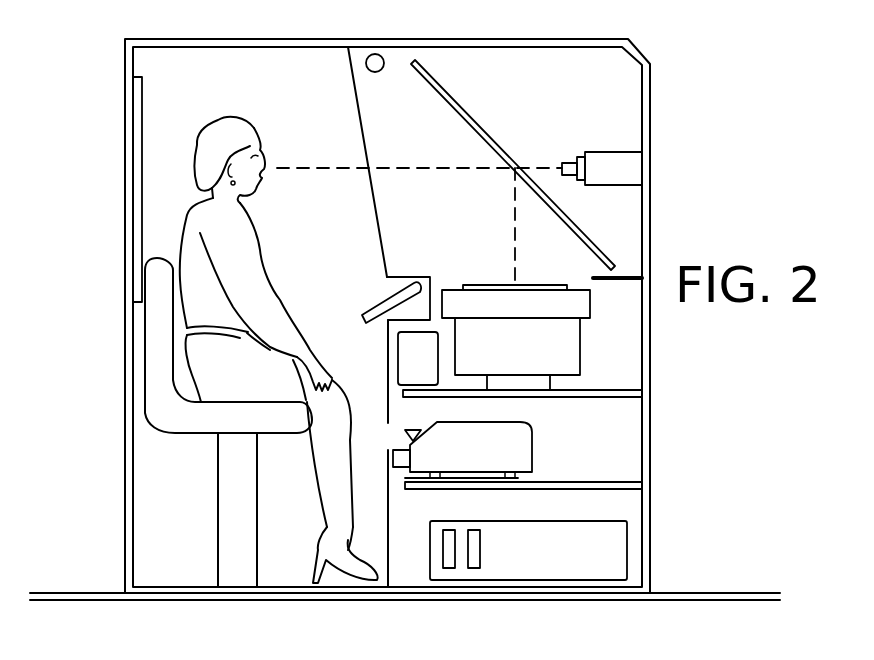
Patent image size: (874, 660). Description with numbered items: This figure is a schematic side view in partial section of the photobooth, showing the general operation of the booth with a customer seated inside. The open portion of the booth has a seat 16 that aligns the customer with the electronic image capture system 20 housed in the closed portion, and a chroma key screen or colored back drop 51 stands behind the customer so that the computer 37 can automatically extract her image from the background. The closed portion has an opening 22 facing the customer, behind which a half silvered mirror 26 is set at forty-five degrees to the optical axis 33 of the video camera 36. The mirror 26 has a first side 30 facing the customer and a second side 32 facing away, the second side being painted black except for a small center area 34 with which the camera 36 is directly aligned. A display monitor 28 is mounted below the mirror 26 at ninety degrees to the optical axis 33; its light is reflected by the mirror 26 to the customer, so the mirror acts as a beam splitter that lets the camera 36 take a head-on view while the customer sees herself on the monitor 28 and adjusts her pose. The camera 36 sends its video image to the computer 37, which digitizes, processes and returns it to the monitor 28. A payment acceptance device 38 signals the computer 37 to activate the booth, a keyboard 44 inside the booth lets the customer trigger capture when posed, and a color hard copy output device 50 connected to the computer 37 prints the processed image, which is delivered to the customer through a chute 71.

The seat 16 is at (181, 435).
The electronic image capture system 20 is at (612, 112).
The opening 22 is at (388, 112).
The half silvered mirror 26 is at (414, 55).
The display monitor 28 is at (580, 338).
The first side 30 is at (443, 97).
The second side 32 is at (468, 108).
The optical axis 33 is at (448, 168).
The small center area 34 is at (523, 167).
The video camera 36 is at (624, 178).
The computer 37 is at (613, 542).
The payment acceptance device 38 is at (397, 342).
The keyboard 44 is at (383, 290).
The color hard copy output device 50 is at (528, 442).
The colored back drop 51 is at (143, 98).
The chute 71 is at (390, 433).